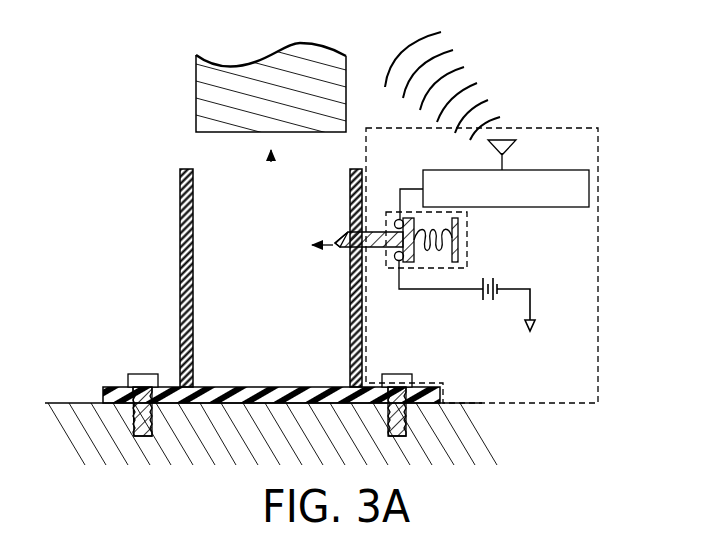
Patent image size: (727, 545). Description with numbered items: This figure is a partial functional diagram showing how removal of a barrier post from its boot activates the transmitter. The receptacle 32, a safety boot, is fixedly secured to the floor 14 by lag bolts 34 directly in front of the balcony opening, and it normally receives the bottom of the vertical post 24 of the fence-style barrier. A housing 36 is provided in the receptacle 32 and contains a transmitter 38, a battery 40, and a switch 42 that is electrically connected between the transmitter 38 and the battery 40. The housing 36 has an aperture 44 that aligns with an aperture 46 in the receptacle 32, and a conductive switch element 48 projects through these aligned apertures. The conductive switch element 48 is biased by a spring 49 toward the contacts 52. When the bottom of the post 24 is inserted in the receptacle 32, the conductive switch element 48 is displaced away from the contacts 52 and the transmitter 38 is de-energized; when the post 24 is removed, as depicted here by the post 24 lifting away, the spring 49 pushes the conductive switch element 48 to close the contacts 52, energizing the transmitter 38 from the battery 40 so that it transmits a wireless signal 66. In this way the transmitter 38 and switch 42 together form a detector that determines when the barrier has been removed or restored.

The floor 14 is at (210, 433).
The vertical post 24 is at (225, 113).
The receptacle 32 is at (170, 228).
The lag bolts 34 is at (140, 374).
The housing 36 is at (573, 128).
The transmitter 38 is at (588, 170).
The battery 40 is at (497, 283).
The switch 42 is at (538, 254).
The aperture 44 is at (364, 235).
The aperture 46 is at (348, 230).
The conductive switch element 48 is at (346, 242).
The spring 49 is at (458, 236).
The contacts 52 is at (399, 219).
The wireless signal 66 is at (453, 63).